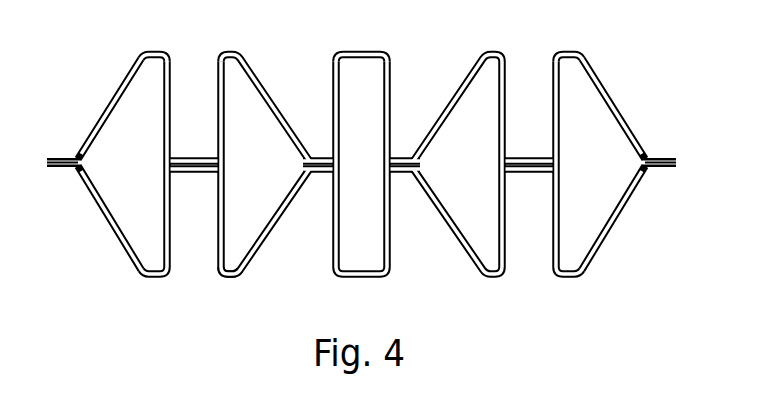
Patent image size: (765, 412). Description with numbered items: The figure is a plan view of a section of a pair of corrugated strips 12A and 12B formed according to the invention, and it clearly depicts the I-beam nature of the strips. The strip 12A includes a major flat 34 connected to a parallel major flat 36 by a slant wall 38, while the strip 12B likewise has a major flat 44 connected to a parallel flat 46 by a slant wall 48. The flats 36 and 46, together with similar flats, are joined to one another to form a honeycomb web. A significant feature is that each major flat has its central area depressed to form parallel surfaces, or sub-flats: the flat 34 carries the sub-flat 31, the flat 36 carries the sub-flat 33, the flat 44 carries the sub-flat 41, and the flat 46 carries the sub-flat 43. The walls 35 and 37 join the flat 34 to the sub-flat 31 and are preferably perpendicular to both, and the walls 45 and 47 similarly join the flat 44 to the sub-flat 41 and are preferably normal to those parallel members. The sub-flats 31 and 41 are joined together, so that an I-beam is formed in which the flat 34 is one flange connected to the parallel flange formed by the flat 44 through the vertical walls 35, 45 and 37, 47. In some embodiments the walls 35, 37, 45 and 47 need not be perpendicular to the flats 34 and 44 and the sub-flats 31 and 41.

The strip 12A is at (610, 97).
The strip 12B is at (610, 233).
The sub-flat 31 is at (187, 157).
The sub-flat 41 is at (197, 172).
The sub-flat 33 is at (367, 51).
The sub-flat 43 is at (357, 278).
The major flat 34 is at (147, 51).
The major flat 44 is at (148, 281).
The wall 35 is at (163, 104).
The wall 45 is at (163, 202).
The major flat 36 is at (313, 157).
The major flat 46 is at (312, 175).
The wall 37 is at (222, 104).
The wall 47 is at (222, 198).
The slant wall 38 is at (263, 83).
The slant wall 48 is at (268, 240).